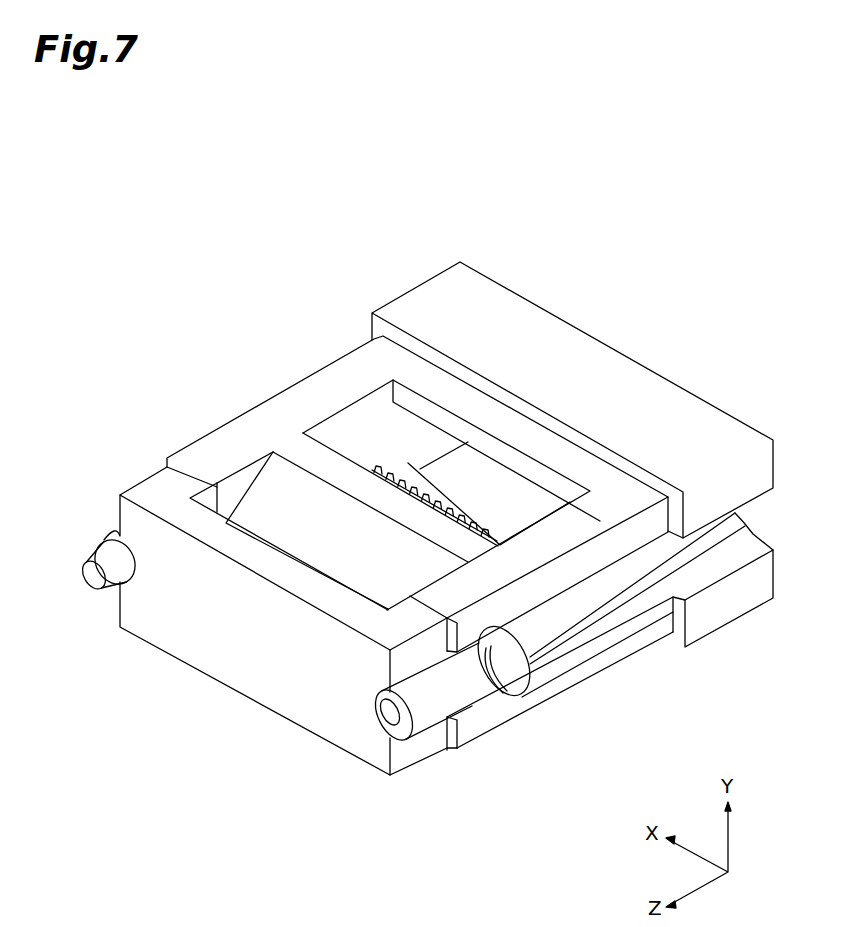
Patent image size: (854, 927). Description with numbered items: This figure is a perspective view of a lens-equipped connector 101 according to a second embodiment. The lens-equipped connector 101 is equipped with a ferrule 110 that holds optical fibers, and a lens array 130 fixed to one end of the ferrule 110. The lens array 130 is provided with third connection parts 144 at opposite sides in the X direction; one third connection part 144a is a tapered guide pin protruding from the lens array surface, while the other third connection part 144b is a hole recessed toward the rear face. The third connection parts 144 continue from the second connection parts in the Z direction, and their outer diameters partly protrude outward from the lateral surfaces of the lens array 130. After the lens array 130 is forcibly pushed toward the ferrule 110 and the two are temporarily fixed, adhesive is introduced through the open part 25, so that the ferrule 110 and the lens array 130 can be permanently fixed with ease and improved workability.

The lens-equipped connector 101 is at (307, 313).
The ferrule 110 is at (248, 409).
The open part 25 is at (279, 504).
The lens array 130 is at (148, 470).
The third connection parts 144 is at (393, 685).
The third connection part (tapered guide pin) 144a is at (105, 581).
The third connection part (hole) 144b is at (398, 711).